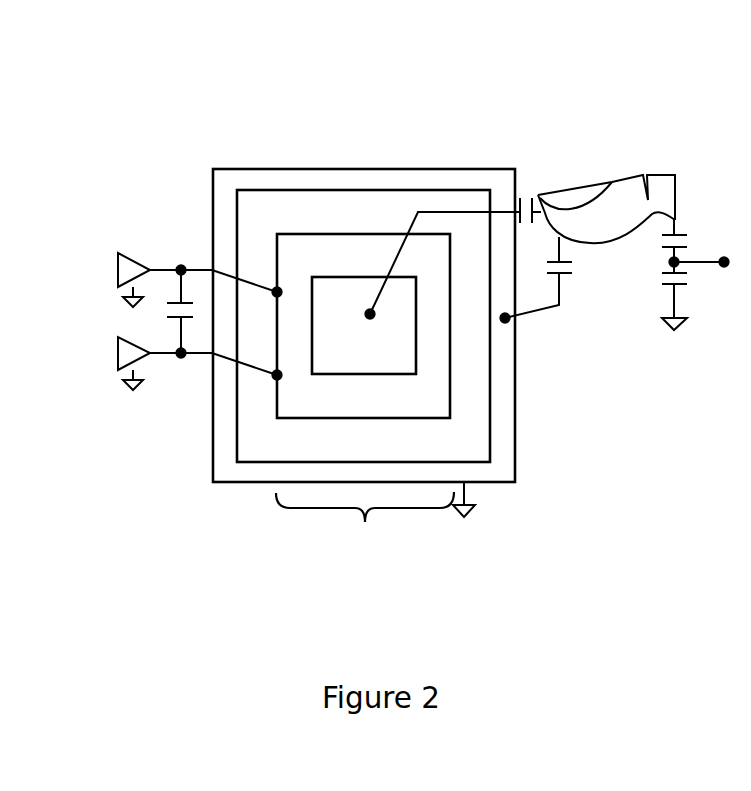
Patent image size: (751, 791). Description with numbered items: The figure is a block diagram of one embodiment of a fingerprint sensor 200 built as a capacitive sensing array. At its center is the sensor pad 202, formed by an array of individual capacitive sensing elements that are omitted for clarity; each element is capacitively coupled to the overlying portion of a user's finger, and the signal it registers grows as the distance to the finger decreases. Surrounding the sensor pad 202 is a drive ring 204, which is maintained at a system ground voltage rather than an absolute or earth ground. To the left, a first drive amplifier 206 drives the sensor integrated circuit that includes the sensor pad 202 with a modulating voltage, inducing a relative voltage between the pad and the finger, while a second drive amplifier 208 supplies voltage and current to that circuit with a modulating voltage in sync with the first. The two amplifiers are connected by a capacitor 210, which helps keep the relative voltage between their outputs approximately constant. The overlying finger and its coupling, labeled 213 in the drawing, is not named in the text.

The sensor 200 is at (370, 302).
The sensor pad 202 is at (332, 291).
The drive ring 204 is at (490, 178).
The first drive amplifier 206 is at (127, 265).
The second drive amplifier 208 is at (120, 352).
The capacitor 210 is at (166, 310).
The finger (user body) with coupling capacitances 213 is at (662, 178).